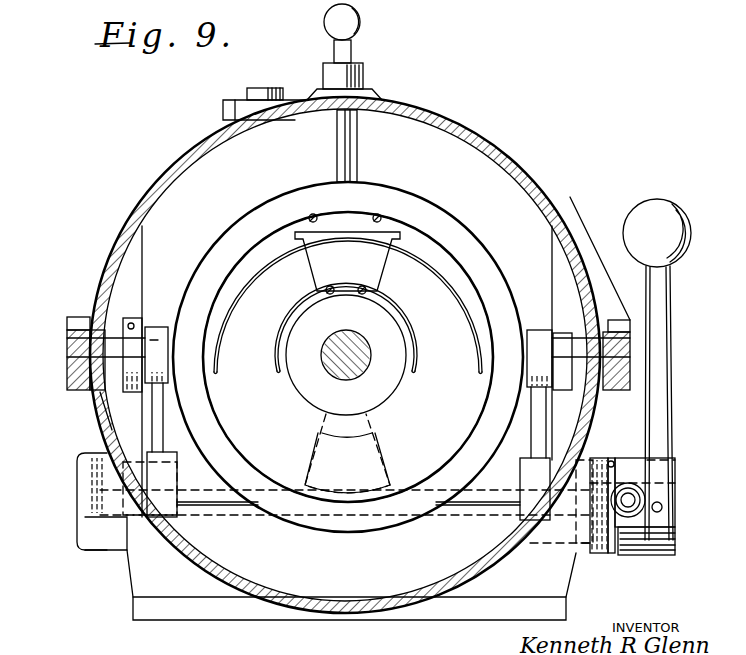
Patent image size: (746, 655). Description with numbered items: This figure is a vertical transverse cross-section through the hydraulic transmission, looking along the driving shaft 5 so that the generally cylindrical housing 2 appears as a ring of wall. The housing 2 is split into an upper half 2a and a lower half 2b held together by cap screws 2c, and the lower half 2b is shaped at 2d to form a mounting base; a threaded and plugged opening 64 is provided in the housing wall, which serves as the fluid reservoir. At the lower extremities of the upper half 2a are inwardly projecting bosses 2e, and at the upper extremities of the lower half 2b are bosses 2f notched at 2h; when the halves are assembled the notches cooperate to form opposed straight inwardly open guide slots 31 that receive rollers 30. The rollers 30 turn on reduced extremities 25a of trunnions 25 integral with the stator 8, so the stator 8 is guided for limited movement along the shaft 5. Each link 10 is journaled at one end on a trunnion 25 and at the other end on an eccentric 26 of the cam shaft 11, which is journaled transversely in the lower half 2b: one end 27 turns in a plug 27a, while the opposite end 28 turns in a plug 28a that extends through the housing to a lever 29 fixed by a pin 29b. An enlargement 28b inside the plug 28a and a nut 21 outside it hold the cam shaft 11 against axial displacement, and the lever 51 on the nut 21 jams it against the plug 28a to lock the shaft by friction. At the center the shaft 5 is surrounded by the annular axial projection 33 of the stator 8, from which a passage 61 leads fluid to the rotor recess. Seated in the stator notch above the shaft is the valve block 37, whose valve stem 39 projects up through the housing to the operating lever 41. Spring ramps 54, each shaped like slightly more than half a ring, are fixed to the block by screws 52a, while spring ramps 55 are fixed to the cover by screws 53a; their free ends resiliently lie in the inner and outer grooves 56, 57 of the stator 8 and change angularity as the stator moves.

The housing 2 is at (536, 192).
The upper half of housing 2a is at (408, 108).
The lower half of housing 2b is at (357, 614).
The cap screws 2c is at (80, 318).
The base 2d is at (188, 614).
The bosses of upper half 2e is at (135, 263).
The bosses of lower half 2f is at (120, 408).
The notch 2h is at (120, 382).
The driving shaft 5 is at (332, 374).
The stator 8 is at (448, 226).
The links 10 is at (178, 438).
The cam shaft 11 is at (247, 512).
The nut 21 is at (632, 548).
The trunnions 25 is at (530, 330).
The reduced extremities of trunnions 25a is at (576, 320).
The eccentrics 26 is at (178, 474).
The end of cam shaft 27 is at (107, 540).
The plug 27a is at (84, 497).
The opposite end of cam shaft 28 is at (642, 460).
The plug 28a is at (623, 462).
The enlargement 28b is at (566, 540).
The lever 29 is at (130, 318).
The pin 29b is at (663, 507).
The rollers 30 is at (68, 372).
The guide slots 31 is at (68, 341).
The annular axial projection 33 is at (241, 232).
The valve block 37 is at (373, 268).
The stem 39 is at (336, 146).
The operating lever 41 is at (352, 38).
The lever 51 is at (645, 500).
The screws 52a is at (361, 287).
The screws 53a is at (316, 215).
The spring ramps 54 is at (406, 320).
The spring ramps 55 is at (228, 288).
The inner grooves 56 is at (281, 378).
The outer grooves 57 is at (216, 378).
The passage 61 is at (366, 452).
The threaded and plugged opening 64 is at (280, 93).